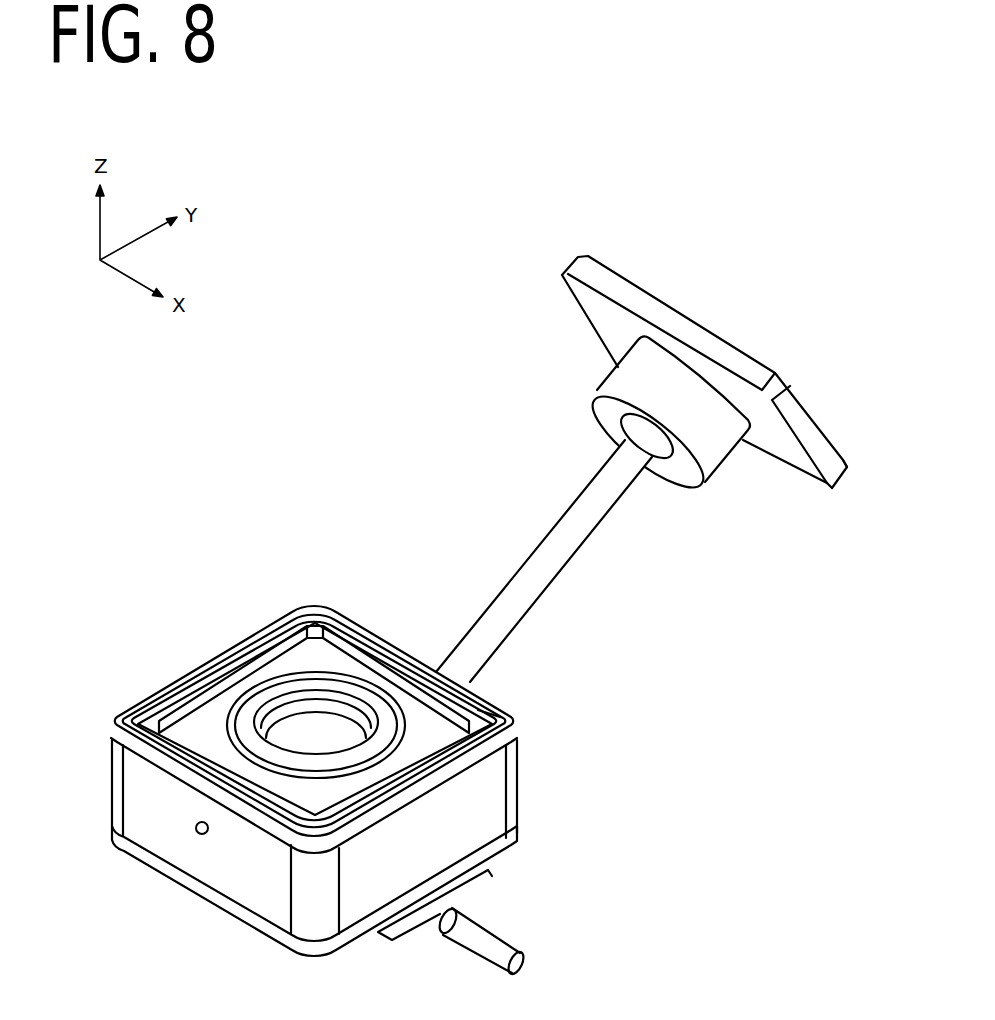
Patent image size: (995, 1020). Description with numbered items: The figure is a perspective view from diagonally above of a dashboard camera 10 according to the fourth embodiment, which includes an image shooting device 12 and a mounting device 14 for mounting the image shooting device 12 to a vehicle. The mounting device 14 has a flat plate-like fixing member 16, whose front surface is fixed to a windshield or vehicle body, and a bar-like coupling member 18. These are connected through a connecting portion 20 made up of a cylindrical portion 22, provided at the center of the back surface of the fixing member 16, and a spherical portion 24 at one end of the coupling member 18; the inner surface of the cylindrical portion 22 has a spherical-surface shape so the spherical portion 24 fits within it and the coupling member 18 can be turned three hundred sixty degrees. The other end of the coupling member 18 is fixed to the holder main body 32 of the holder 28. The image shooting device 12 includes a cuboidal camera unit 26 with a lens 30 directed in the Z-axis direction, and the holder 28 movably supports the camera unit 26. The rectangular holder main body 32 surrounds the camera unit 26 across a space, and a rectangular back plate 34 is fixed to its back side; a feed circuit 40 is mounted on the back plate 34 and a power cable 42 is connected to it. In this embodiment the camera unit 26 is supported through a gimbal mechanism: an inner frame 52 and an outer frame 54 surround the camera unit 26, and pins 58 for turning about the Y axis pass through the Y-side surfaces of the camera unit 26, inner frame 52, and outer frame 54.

The dashboard camera 10 is at (385, 509).
The image shooting device 12 is at (526, 758).
The mounting device 14 is at (590, 541).
The fixing member 16 is at (693, 330).
The coupling member 18 is at (518, 598).
The connecting portion 20 is at (598, 383).
The cylindrical portion 22 is at (720, 442).
The spherical portion 24 is at (617, 430).
The camera unit 26 is at (274, 641).
The holder 28 is at (526, 795).
The lens 30 is at (292, 722).
The holder main body 32 is at (144, 859).
The back plate 34 is at (255, 920).
The feed circuit 40 is at (397, 917).
The power cable 42 is at (490, 938).
The inner frame 52 is at (480, 712).
The outer frame 54 is at (122, 787).
The pins for turning about Y axis 58 is at (200, 835).